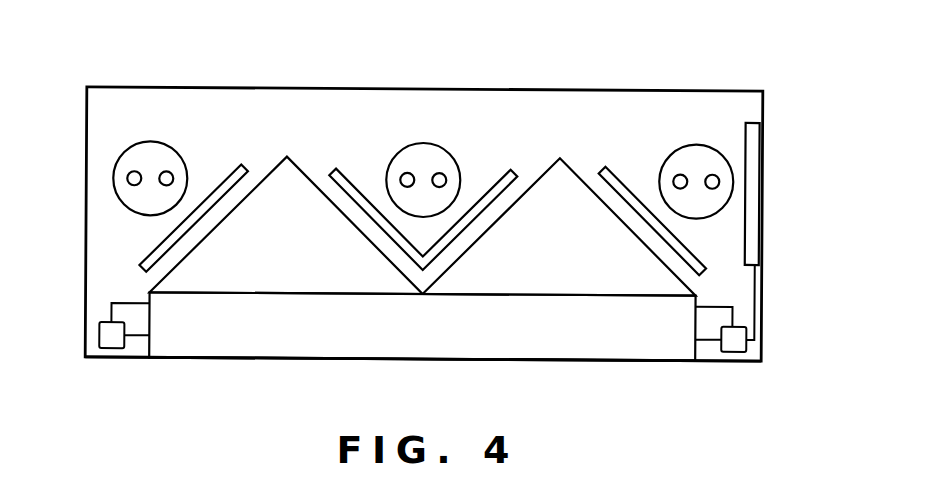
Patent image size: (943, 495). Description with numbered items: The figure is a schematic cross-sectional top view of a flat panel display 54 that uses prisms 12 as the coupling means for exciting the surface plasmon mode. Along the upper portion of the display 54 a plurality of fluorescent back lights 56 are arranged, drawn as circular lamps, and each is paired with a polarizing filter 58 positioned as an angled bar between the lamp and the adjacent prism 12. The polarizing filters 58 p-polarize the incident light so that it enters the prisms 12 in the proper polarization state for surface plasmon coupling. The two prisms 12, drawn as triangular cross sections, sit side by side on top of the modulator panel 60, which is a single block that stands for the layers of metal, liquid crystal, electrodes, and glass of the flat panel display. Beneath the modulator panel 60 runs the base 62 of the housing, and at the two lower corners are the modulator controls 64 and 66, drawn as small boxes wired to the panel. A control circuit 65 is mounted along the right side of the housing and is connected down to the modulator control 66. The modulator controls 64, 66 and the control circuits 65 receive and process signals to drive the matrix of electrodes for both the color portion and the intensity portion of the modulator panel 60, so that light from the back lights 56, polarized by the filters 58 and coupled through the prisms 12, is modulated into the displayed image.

The prism 12 is at (297, 262).
The display 54 is at (800, 220).
The fluorescent back light 56 is at (117, 163).
The polarizing filter 58 is at (242, 168).
The modulator panel 60 is at (197, 330).
The base 62 is at (297, 358).
The modulator control 64 is at (98, 334).
The control circuits 65 is at (757, 228).
The modulator control 66 is at (748, 348).